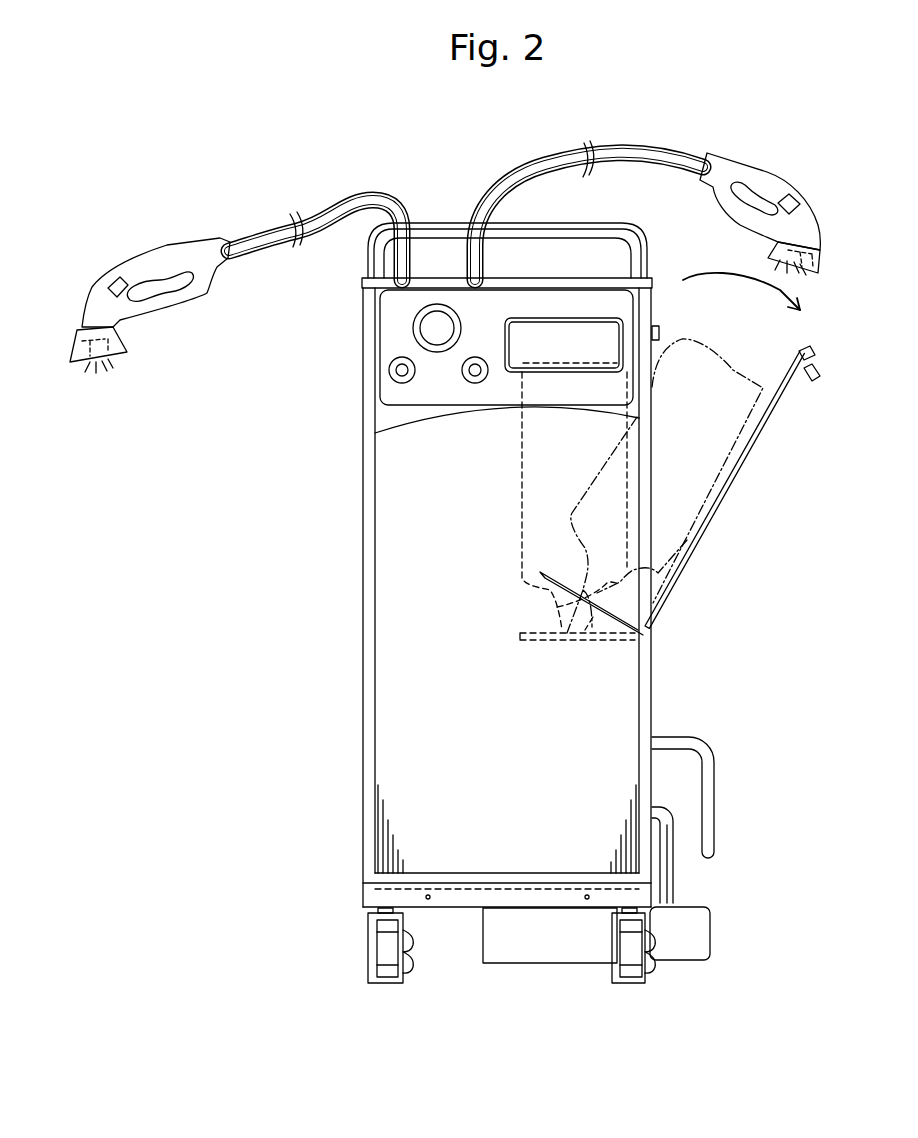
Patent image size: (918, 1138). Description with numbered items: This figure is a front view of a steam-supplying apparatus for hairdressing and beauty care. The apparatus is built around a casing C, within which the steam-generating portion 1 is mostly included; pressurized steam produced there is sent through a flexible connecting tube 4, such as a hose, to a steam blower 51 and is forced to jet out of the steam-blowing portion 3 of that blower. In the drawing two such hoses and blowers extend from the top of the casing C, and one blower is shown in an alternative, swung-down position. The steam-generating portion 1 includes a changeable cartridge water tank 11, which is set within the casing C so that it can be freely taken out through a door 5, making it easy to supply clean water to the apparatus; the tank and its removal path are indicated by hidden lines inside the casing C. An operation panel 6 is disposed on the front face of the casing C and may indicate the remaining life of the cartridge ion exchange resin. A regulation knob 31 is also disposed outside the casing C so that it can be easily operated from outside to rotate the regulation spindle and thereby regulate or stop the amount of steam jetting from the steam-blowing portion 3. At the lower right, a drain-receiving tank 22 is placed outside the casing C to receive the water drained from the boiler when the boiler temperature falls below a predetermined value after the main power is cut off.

The steam-generating portion 1 is at (722, 522).
The steam-blowing portion 3 is at (77, 330).
The flexible connecting tube 4 is at (323, 200).
The door 5 is at (768, 413).
The operation panel 6 is at (600, 333).
The cartridge water tank 11 is at (733, 383).
The drain-receiving tank 22 is at (706, 928).
The regulation knob 31 is at (403, 383).
The steam blower 51 is at (90, 290).
The casing C is at (402, 720).